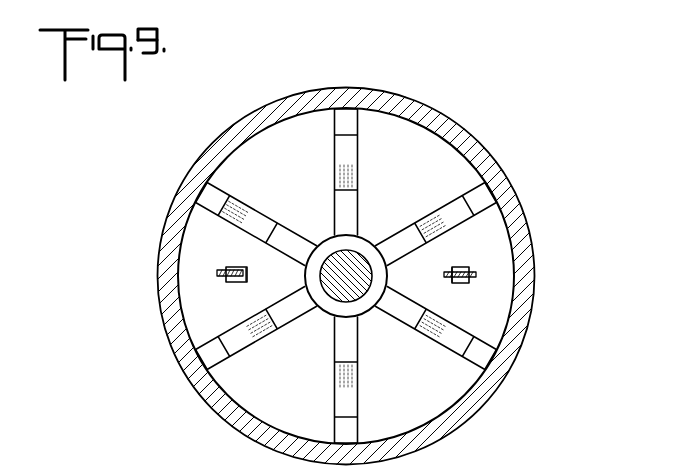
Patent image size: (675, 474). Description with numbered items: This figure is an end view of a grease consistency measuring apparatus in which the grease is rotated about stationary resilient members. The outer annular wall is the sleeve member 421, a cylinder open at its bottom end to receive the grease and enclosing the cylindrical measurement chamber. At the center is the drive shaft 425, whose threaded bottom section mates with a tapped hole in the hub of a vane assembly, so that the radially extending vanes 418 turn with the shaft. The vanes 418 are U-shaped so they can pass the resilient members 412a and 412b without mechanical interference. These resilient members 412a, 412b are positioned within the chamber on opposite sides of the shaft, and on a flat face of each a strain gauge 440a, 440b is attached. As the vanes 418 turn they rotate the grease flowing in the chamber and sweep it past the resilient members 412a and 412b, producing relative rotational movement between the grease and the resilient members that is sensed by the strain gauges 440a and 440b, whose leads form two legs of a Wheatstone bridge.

The sleeve member 421 is at (480, 148).
The vanes 418 is at (401, 231).
The drive shaft 425 is at (326, 258).
The resilient member 412a is at (223, 267).
The resilient member 412b is at (492, 251).
The strain gauge 440a is at (245, 270).
The strain gauge 440b is at (450, 272).